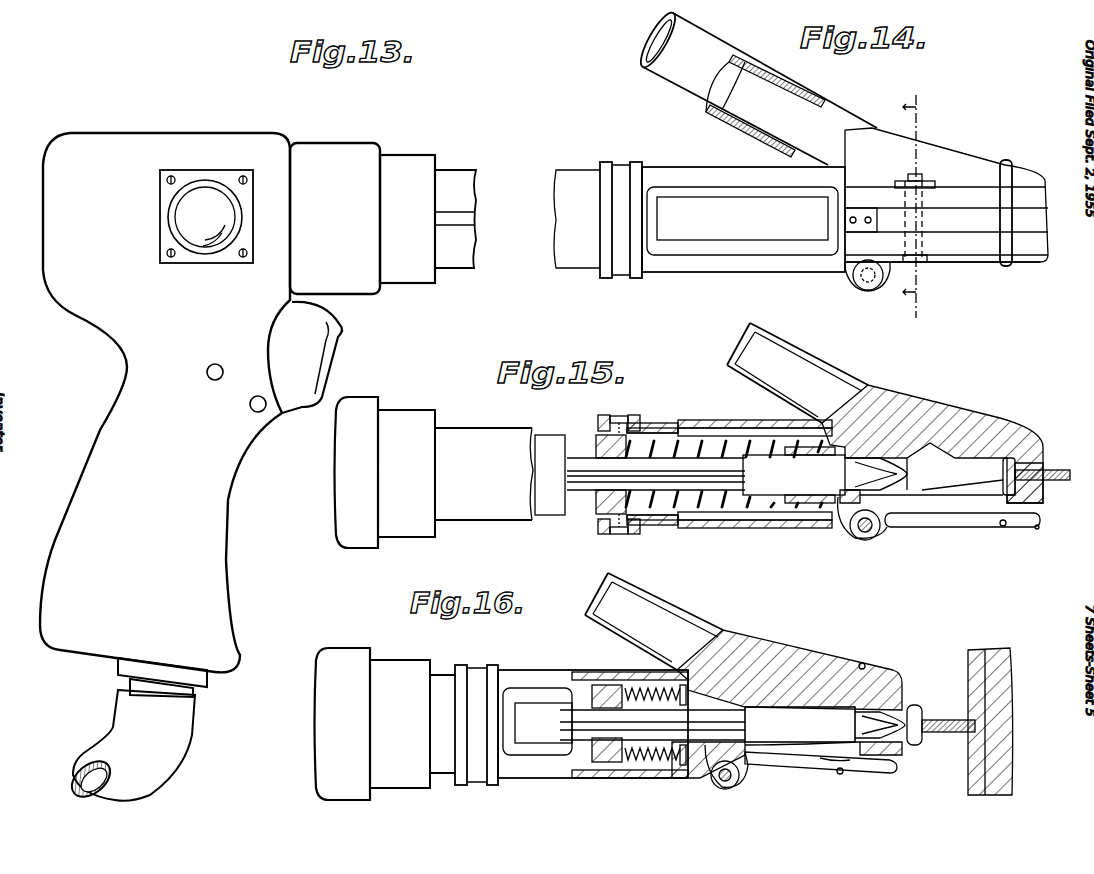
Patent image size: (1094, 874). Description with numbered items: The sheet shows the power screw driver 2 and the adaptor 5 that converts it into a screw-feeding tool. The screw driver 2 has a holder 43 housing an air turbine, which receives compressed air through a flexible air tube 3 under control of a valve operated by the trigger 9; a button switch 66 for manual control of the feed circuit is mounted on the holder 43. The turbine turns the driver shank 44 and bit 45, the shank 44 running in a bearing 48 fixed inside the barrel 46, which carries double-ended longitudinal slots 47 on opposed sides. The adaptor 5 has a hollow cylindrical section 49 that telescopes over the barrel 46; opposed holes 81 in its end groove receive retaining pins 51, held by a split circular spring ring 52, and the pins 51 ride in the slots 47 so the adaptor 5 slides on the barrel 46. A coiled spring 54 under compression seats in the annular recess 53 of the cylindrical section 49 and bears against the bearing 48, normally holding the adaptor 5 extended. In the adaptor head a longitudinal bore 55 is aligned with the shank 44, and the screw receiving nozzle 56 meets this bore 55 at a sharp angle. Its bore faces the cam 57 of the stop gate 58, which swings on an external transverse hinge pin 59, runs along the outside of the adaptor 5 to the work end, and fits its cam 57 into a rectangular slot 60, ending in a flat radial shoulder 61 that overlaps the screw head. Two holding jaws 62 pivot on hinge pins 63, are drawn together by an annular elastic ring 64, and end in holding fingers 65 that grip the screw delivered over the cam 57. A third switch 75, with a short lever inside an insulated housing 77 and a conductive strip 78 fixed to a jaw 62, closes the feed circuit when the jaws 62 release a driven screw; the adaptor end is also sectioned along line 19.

In FIG. 13, the power screw driver 2 is at (516, 150).
In FIG. 14, the power screw driver 2 is at (595, 157).
In FIG. 15, the power screw driver 2 is at (385, 472).
In FIG. 16, the power screw driver 2 is at (373, 724).
In FIG. 13, the flexible air tube 3 is at (103, 748).
In FIG. 14, the adaptor 5 is at (980, 140).
In FIG. 13, the trigger 9 is at (303, 362).
In FIG. 14, the section line 19 is at (906, 203).
In FIG. 13, the holder 43 is at (313, 128).
In FIG. 15, the driver shank 44 is at (570, 468).
In FIG. 16, the driver shank 44 is at (582, 720).
In FIG. 15, the bit 45 is at (855, 492).
In FIG. 16, the bit 45 is at (868, 715).
In FIG. 13, the barrel 46 is at (460, 264).
In FIG. 14, the barrel 46 is at (576, 262).
In FIG. 15, the barrel 46 is at (468, 432).
In FIG. 16, the barrel 46 is at (442, 724).
In FIG. 13, the longitudinal slot 47 is at (470, 216).
In FIG. 15, the longitudinal slot 47 is at (558, 520).
In FIG. 15, the bearing 48 is at (598, 516).
In FIG. 16, the bearing 48 is at (607, 762).
In FIG. 14, the cylindrical section 49 is at (690, 174).
In FIG. 15, the cylindrical section 49 is at (705, 528).
In FIG. 16, the cylindrical section 49 is at (545, 675).
In FIG. 15, the retaining pin 51 is at (598, 425).
In FIG. 14, the split circular spring ring 52 is at (622, 168).
In FIG. 15, the split circular spring ring 52 is at (620, 418).
In FIG. 16, the split circular spring ring 52 is at (475, 672).
In FIG. 15, the annular recess 53 is at (808, 428).
In FIG. 15, the coiled spring 54 is at (743, 500).
In FIG. 16, the coiled spring 54 is at (630, 690).
In FIG. 15, the longitudinal bore 55 is at (925, 490).
In FIG. 16, the longitudinal bore 55 is at (706, 744).
In FIG. 15, the screw receiving nozzle 56 is at (915, 435).
In FIG. 16, the screw receiving nozzle 56 is at (743, 641).
In FIG. 16, the cam 57 is at (835, 758).
In FIG. 14, the stop gate 58 is at (975, 260).
In FIG. 15, the stop gate 58 is at (985, 528).
In FIG. 16, the stop gate 58 is at (792, 762).
In FIG. 14, the hinge pin 59 is at (866, 290).
In FIG. 15, the hinge pin 59 is at (867, 540).
In FIG. 16, the hinge pin 59 is at (726, 789).
In FIG. 15, the rectangular slot 60 is at (897, 497).
In FIG. 15, the flat radial shoulder 61 is at (1037, 529).
In FIG. 16, the flat radial shoulder 61 is at (904, 756).
In FIG. 14, the holding jaw 62 is at (967, 222).
In FIG. 14, the hinge pin 63 is at (912, 178).
In FIG. 14, the annular elastic ring 64 is at (1004, 266).
In FIG. 15, the annular elastic ring 64 is at (1004, 527).
In FIG. 16, the annular elastic ring 64 is at (862, 663).
In FIG. 15, the holding finger 65 is at (1025, 465).
In FIG. 13, the button switch 66 is at (175, 205).
In FIG. 14, the third switch 75 is at (834, 183).
In FIG. 14, the housing 77 is at (712, 240).
In FIG. 16, the housing 77 is at (537, 721).
In FIG. 14, the strip 78 is at (845, 220).
In FIG. 15, the hole 81 is at (640, 428).